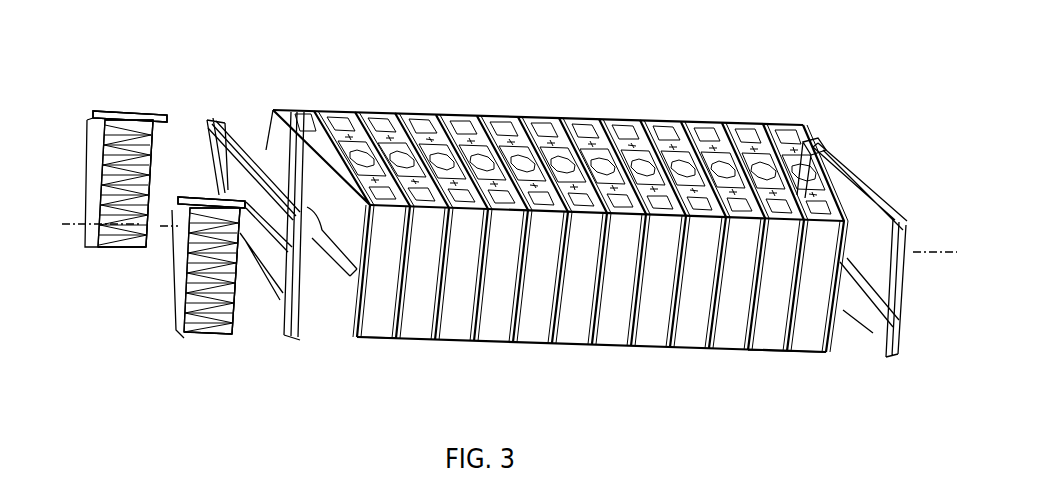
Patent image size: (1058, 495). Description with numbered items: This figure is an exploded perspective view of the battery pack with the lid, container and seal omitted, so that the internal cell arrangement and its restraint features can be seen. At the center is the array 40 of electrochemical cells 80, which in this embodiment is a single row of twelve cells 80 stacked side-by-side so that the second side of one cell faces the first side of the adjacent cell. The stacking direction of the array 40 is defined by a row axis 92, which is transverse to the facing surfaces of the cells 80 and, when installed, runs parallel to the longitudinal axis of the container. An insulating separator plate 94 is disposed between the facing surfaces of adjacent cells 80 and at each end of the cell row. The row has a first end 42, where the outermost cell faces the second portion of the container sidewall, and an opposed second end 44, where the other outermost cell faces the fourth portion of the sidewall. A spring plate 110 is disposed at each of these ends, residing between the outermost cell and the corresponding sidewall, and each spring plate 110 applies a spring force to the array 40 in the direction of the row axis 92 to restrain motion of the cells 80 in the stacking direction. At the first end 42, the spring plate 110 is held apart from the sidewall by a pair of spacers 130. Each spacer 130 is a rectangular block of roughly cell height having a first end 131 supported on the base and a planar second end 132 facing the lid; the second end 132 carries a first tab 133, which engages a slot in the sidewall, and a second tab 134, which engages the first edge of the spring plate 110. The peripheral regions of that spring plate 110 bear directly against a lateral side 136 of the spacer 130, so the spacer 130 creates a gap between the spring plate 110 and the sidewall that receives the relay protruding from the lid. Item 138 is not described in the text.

The array 40 is at (502, 218).
The first end of the array 42 is at (268, 118).
The second end of the array 44 is at (787, 142).
The electrochemical cells 80 is at (297, 112).
The row axis 92 is at (912, 245).
The insulating separator plate 94 is at (355, 338).
The spring plates 110 is at (268, 302).
The spacers 130 is at (95, 250).
The first end of the spacer 131 is at (95, 250).
The second end of the spacer 132 is at (122, 108).
The first tab 133 is at (206, 196).
The second tab 134 is at (153, 112).
The lateral side of the spacer 136 is at (112, 250).
The top wall 138 is at (93, 108).